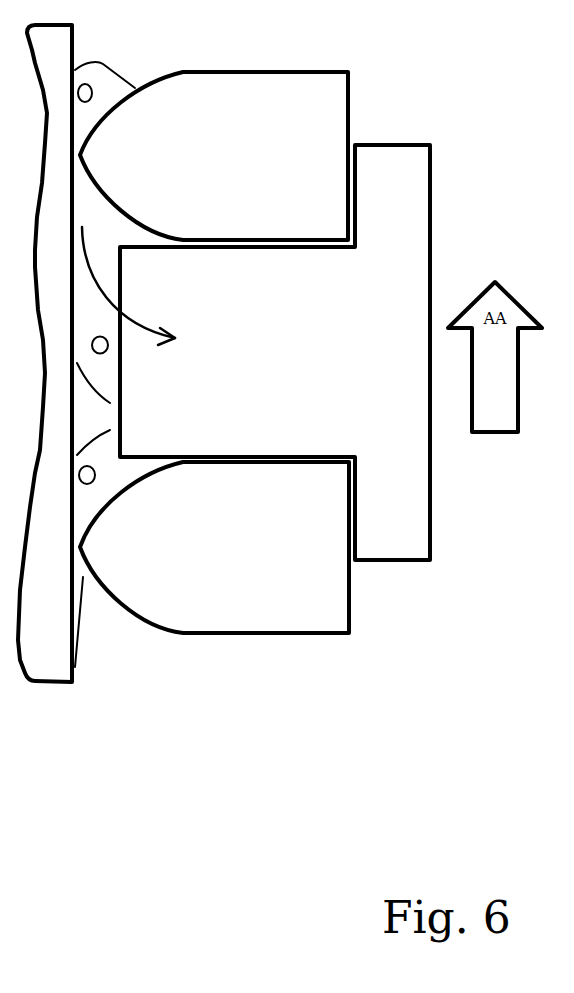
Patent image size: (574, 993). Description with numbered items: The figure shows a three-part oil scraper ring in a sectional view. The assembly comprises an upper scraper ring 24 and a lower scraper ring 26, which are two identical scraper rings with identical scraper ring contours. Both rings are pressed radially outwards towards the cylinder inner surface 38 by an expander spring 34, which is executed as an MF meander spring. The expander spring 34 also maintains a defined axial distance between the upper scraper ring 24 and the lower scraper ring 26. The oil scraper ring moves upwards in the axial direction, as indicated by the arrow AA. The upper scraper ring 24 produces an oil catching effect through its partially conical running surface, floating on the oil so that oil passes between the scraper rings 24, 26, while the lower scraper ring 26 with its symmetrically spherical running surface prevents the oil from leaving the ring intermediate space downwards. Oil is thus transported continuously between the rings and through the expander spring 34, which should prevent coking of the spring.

The upper scraper ring 24 is at (214, 156).
The lower scraper ring 26 is at (214, 547).
The expander spring 34 is at (275, 352).
The cylinder inner surface 38 is at (45, 353).